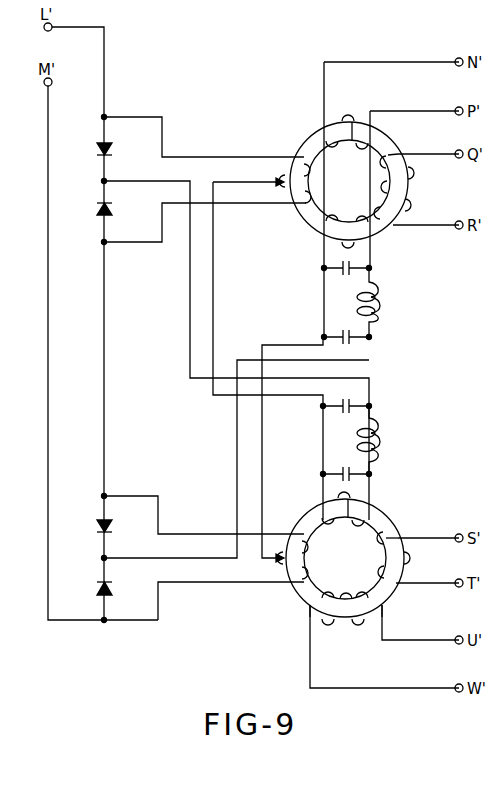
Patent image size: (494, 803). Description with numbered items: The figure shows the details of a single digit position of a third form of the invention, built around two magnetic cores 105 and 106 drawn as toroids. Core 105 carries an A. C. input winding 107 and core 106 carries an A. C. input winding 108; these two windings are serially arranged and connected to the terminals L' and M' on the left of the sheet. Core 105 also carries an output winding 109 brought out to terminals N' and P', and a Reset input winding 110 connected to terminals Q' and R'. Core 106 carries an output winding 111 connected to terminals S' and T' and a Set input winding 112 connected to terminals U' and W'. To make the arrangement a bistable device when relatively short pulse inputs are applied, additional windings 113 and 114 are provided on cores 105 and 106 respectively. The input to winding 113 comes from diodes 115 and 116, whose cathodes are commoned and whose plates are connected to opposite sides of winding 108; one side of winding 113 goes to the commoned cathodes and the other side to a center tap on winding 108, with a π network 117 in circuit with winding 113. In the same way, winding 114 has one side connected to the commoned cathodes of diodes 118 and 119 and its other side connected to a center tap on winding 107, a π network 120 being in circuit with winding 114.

The core 105 is at (314, 142).
The core 106 is at (316, 512).
The A. C. input winding 107 is at (306, 176).
The A. C. input winding 108 is at (304, 550).
The output winding 109 is at (363, 146).
The Reset input winding 110 is at (413, 178).
The output winding 111 is at (410, 558).
The Set input winding 112 is at (330, 600).
The additional winding 113 is at (334, 223).
The additional winding 114 is at (354, 521).
The diode 115 is at (101, 527).
The diode 116 is at (101, 590).
The π network 117 is at (398, 300).
The diode 118 is at (101, 147).
The diode 119 is at (101, 211).
The π network 120 is at (396, 435).